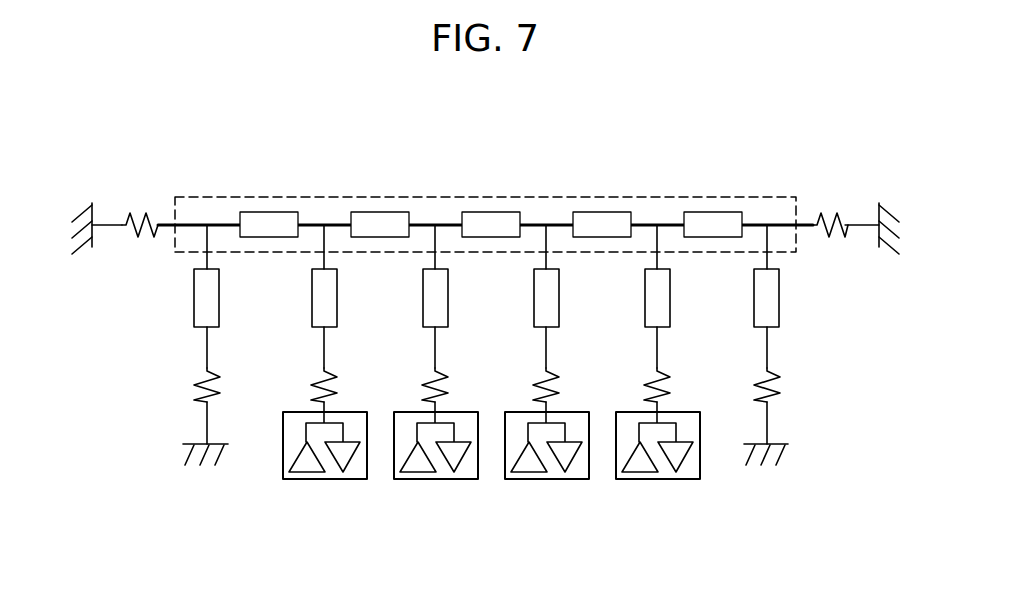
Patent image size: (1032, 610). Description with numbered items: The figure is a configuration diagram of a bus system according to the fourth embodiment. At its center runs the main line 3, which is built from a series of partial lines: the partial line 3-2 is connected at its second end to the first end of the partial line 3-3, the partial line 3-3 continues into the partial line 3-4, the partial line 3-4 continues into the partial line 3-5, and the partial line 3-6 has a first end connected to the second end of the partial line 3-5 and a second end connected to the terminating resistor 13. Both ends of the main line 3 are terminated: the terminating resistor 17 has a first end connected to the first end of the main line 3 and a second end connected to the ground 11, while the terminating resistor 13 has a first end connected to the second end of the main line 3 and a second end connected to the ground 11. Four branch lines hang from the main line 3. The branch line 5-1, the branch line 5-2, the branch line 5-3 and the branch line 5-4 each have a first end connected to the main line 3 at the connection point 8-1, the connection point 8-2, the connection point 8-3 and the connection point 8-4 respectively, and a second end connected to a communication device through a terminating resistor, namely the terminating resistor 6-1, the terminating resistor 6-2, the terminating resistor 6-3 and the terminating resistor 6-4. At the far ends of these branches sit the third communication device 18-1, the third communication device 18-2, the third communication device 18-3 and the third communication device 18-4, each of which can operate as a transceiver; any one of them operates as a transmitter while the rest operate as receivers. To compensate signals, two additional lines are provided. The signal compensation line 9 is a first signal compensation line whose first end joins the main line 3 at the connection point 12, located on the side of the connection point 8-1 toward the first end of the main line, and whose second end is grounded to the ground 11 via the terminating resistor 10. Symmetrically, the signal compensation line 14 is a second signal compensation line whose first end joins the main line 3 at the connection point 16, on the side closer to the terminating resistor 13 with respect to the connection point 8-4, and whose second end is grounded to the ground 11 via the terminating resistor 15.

The main line 3 is at (298, 197).
The partial line 3-2 is at (262, 212).
The partial line 3-3 is at (380, 212).
The partial line 3-4 is at (491, 212).
The partial line 3-5 is at (602, 212).
The partial line 3-6 is at (713, 212).
The connection point 8-1 is at (327, 212).
The connection point 8-2 is at (435, 212).
The connection point 8-3 is at (546, 212).
The connection point 8-4 is at (657, 212).
The connection point 12 is at (207, 212).
The connection point 16 is at (767, 212).
The terminating resistor 17 is at (122, 214).
The terminating resistor 13 is at (827, 212).
The ground 11 is at (78, 218).
The signal compensation line 9 is at (200, 266).
The terminating resistor 10 is at (200, 368).
The signal compensation line 14 is at (780, 290).
The terminating resistor 15 is at (770, 400).
The branch line 5-1 is at (312, 310).
The branch line 5-2 is at (423, 310).
The branch line 5-3 is at (534, 310).
The branch line 5-4 is at (645, 310).
The terminating resistor 6-1 is at (324, 370).
The terminating resistor 6-2 is at (435, 370).
The terminating resistor 6-3 is at (546, 370).
The terminating resistor 6-4 is at (657, 370).
The third communication device 18-1 is at (324, 479).
The third communication device 18-2 is at (435, 479).
The third communication device 18-3 is at (546, 479).
The third communication device 18-4 is at (657, 479).